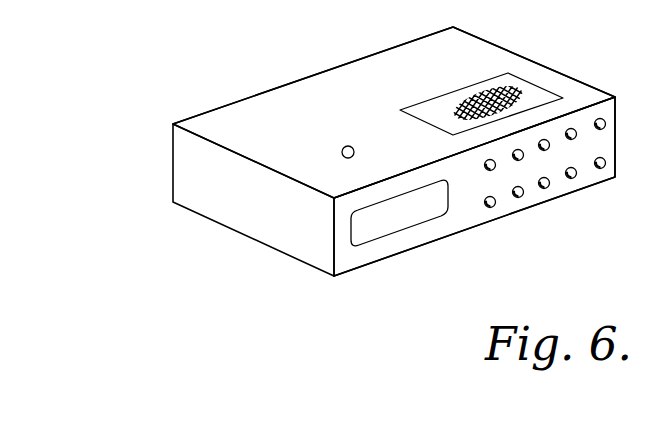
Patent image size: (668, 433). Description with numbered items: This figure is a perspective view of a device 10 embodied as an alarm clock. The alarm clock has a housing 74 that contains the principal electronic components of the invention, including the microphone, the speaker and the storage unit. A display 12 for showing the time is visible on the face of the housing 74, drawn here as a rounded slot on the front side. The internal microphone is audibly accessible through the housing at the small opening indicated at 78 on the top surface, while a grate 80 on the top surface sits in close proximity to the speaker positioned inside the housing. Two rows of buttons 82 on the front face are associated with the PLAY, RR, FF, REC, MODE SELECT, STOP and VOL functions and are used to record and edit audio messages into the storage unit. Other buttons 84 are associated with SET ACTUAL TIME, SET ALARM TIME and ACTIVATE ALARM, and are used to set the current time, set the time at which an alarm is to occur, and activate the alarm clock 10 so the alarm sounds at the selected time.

The device 10 is at (272, 73).
The display 12 is at (416, 210).
The housing 74 is at (475, 48).
The microphone opening 78 is at (343, 148).
The grate 80 is at (528, 91).
The buttons 82 is at (515, 226).
The other buttons 84 is at (603, 202).